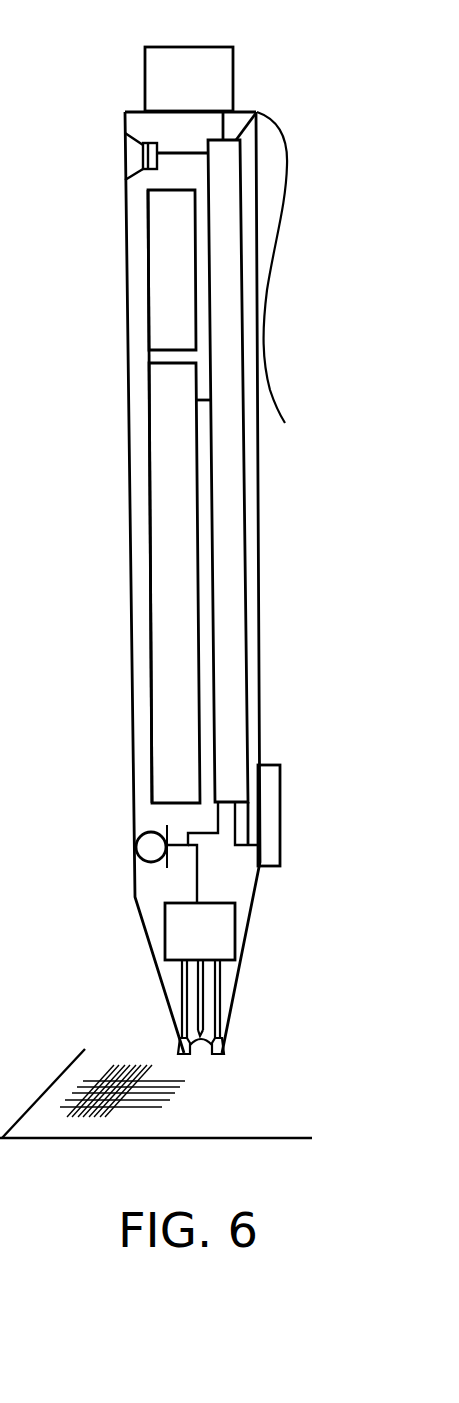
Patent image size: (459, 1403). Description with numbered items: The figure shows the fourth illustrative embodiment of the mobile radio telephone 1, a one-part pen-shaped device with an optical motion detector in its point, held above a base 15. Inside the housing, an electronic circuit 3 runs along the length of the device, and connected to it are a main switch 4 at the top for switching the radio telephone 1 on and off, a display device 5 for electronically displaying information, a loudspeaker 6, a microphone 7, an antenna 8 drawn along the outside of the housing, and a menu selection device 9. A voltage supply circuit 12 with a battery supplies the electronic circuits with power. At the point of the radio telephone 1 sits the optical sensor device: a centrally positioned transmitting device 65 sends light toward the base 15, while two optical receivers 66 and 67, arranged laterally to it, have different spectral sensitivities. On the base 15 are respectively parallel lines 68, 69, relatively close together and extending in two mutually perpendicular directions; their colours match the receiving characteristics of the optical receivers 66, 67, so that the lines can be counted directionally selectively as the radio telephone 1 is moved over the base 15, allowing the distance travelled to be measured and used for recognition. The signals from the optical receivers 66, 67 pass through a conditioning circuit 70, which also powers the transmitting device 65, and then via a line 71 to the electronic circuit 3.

The radio telephone 1 is at (262, 493).
The electronic circuit 3 is at (240, 542).
The main switch 4 is at (233, 77).
The display device 5 is at (157, 400).
The loudspeaker 6 is at (125, 150).
The microphone 7 is at (135, 843).
The antenna 8 is at (290, 162).
The menu selection device 9 is at (283, 780).
The voltage supply circuit 12 is at (160, 228).
The base 15 is at (287, 1138).
The transmitting device 65 is at (205, 1027).
The optical receiver 66 is at (182, 1043).
The optical receiver 67 is at (222, 1043).
The parallel lines 68 is at (110, 1115).
The parallel lines 69 is at (153, 1107).
The conditioning circuit 70 is at (236, 932).
The line 71 is at (197, 884).